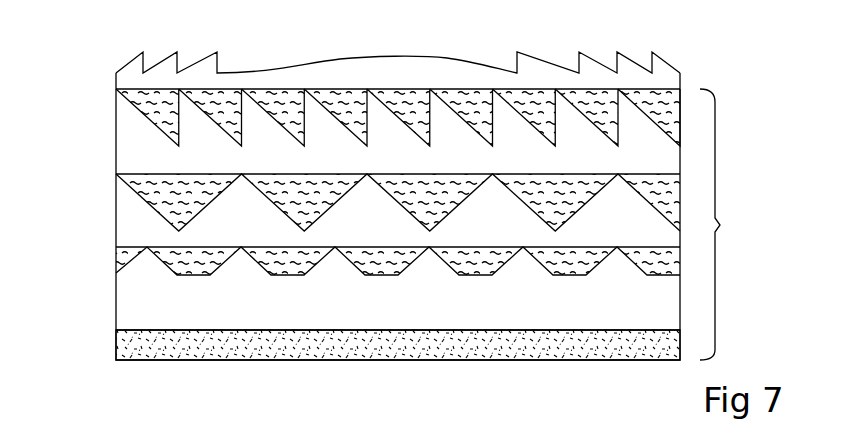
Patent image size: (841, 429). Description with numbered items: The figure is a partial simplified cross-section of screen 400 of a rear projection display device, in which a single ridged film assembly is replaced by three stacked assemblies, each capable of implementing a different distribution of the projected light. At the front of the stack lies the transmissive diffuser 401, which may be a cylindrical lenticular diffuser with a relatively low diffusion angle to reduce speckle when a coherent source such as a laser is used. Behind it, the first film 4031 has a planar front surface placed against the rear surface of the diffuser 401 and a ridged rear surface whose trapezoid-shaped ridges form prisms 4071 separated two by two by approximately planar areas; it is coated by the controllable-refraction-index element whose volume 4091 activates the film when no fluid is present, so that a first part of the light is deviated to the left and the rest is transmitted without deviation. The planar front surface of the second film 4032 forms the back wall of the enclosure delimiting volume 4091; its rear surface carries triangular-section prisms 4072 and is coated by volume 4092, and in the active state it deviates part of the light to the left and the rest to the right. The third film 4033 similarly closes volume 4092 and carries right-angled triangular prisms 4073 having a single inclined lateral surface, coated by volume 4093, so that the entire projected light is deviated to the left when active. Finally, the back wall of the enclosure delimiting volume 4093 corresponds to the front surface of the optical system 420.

The screen 400 is at (439, 216).
The optical system 420 is at (410, 57).
The transmissive diffuser 401 is at (130, 347).
The volume 4093 is at (140, 99).
The triangular prisms 4073 is at (128, 119).
The film 4033 is at (128, 155).
The volume 4092 is at (140, 187).
The prisms 4072 is at (128, 210).
The film 4032 is at (128, 236).
The volume 4091 is at (119, 255).
The prisms 4071 is at (140, 270).
The film 4031 is at (137, 315).